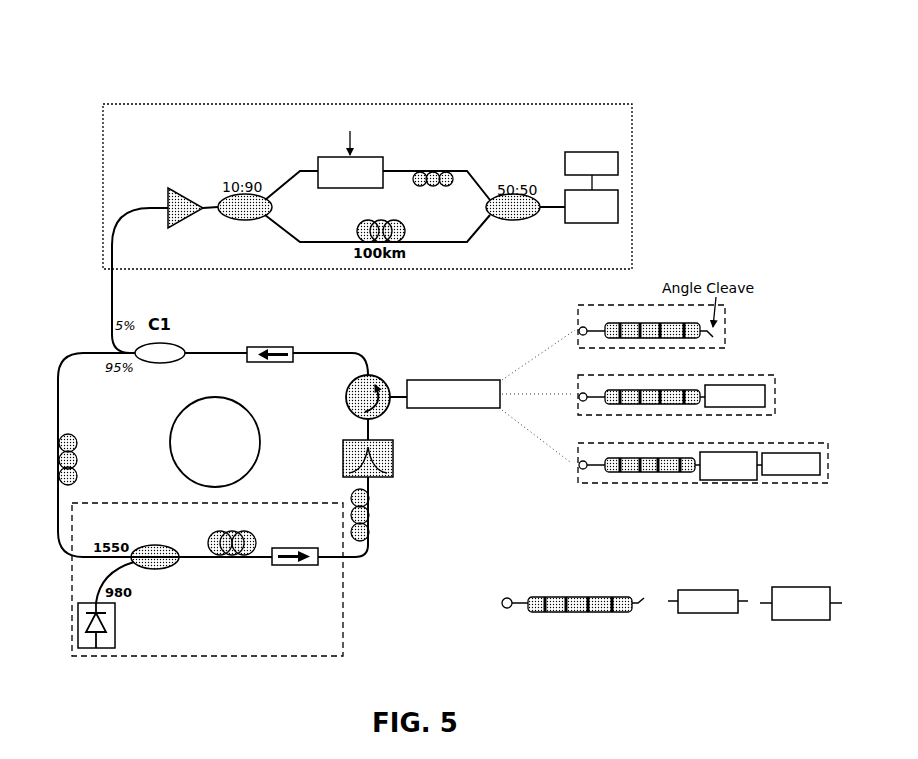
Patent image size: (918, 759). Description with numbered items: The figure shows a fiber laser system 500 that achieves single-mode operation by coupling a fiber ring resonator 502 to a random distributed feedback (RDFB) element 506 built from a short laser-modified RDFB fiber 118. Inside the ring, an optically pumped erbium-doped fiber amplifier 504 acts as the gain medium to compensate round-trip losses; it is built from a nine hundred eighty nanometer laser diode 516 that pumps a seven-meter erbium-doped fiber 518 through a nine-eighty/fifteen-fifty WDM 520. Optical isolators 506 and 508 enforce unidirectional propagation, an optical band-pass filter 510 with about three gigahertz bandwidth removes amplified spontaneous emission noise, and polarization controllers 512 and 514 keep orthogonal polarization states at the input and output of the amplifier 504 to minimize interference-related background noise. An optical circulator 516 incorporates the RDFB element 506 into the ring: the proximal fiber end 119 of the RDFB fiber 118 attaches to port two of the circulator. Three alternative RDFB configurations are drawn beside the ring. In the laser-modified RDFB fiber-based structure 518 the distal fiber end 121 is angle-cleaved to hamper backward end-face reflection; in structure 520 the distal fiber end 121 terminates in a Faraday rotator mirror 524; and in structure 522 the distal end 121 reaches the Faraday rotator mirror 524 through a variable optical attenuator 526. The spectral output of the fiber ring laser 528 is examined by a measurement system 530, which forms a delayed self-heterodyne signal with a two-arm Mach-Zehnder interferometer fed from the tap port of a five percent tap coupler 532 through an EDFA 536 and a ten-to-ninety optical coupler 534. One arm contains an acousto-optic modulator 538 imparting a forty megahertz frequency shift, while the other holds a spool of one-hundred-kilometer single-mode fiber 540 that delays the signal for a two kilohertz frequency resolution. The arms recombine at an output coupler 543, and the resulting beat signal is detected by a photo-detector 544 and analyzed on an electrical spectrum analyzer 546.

The fiber laser system 500 is at (378, 36).
The measurement system 530 is at (100, 102).
The EDFA 536 is at (195, 220).
The 10:90 optical coupler 534 is at (240, 222).
The acousto-optic modulator 538 is at (386, 156).
The spool of 100-km SMF-28 540 is at (402, 221).
The 50:50 coupler 543 is at (515, 223).
The photo-detector 544 is at (583, 226).
The electrical spectrum analyzer 546 is at (560, 150).
The fiber ring resonator 502 is at (58, 362).
The 5% tap coupler (C1) 532 is at (180, 341).
The optical isolator 508 is at (297, 347).
The optical circulator / 980 nm laser diode 516 is at (386, 378).
The RDFB element / optical isolator 506 is at (443, 412).
The polarization controller 514 is at (55, 455).
The fiber ring laser 528 is at (170, 440).
The optical band-pass filter 510 is at (396, 479).
The polarization controller 512 is at (373, 547).
The erbium-doped fiber amplifier 504 is at (346, 636).
The 980/1550 WDM / laser-modified RDFB fiber-based structure 520 is at (167, 566).
The erbium-doped fiber / laser-modified RDFB fiber-based structure 518 is at (257, 535).
The laser-modified RDFB fiber-based structure 522 is at (778, 442).
The laser-modified RDFB fiber 118 is at (629, 615).
The proximal fiber end 119 is at (511, 598).
The distal fiber end 121 is at (641, 600).
The faraday rotator mirror 524 is at (737, 616).
The variable optical attenuator 526 is at (823, 623).